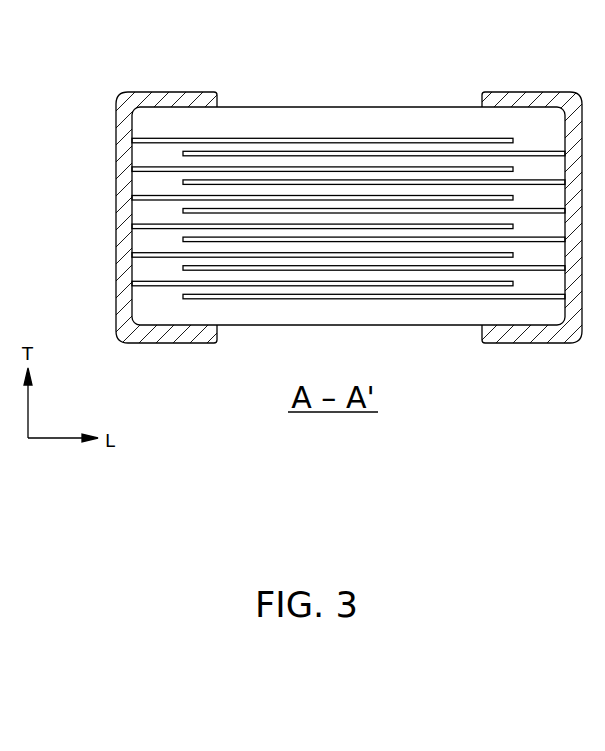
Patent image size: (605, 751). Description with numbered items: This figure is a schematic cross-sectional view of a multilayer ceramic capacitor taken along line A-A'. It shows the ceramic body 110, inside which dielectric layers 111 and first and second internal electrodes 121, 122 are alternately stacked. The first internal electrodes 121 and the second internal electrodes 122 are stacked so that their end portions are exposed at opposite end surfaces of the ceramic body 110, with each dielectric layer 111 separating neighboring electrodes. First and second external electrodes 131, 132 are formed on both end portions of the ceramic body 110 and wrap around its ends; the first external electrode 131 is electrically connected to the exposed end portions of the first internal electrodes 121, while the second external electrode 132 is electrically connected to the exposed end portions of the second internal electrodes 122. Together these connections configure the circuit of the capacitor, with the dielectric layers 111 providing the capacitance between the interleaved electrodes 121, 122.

The ceramic body 110 is at (352, 107).
The dielectric layer 111 is at (142, 152).
The first internal electrode 121 is at (170, 138).
The second internal electrode 122 is at (195, 153).
The first external electrode 131 is at (168, 98).
The second external electrode 132 is at (532, 96).